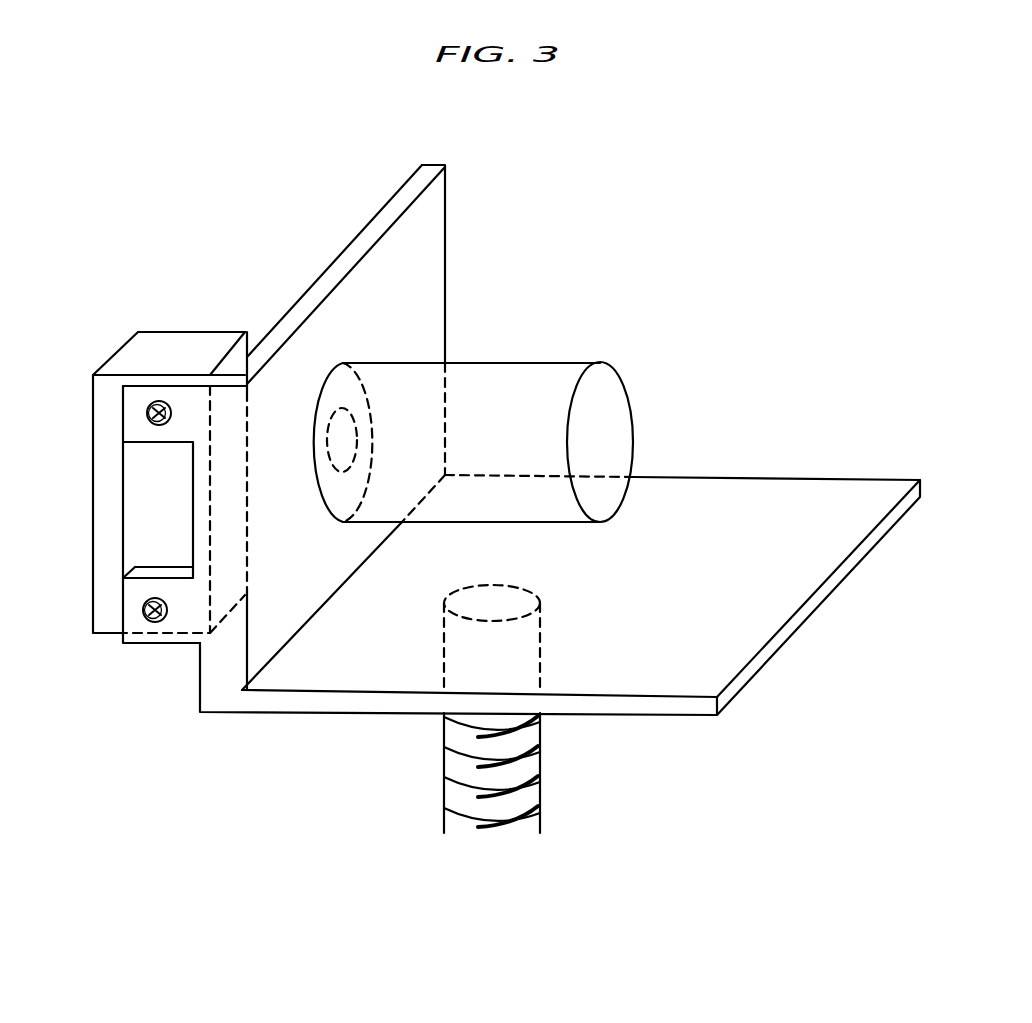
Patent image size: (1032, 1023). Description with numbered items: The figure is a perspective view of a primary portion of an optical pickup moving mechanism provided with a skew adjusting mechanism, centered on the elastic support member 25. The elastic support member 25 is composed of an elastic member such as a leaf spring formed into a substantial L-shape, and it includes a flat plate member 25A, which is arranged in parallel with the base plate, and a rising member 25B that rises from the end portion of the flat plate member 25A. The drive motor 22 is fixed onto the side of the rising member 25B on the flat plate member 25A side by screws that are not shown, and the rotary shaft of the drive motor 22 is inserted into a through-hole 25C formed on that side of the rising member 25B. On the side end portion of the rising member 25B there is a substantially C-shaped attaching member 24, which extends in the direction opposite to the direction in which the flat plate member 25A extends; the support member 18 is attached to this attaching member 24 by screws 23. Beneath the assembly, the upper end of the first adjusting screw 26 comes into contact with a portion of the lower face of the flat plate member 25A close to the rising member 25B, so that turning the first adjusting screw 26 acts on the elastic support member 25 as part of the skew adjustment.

The support member 18 is at (189, 340).
The drive motor 22 is at (542, 375).
The screws 23 is at (146, 413).
The attaching member 24 is at (142, 610).
The elastic support member 25 is at (560, 467).
The flat plate member 25A is at (643, 667).
The rising member 25B is at (379, 427).
The through-hole 25C is at (340, 412).
The first adjusting screw 26 is at (443, 785).